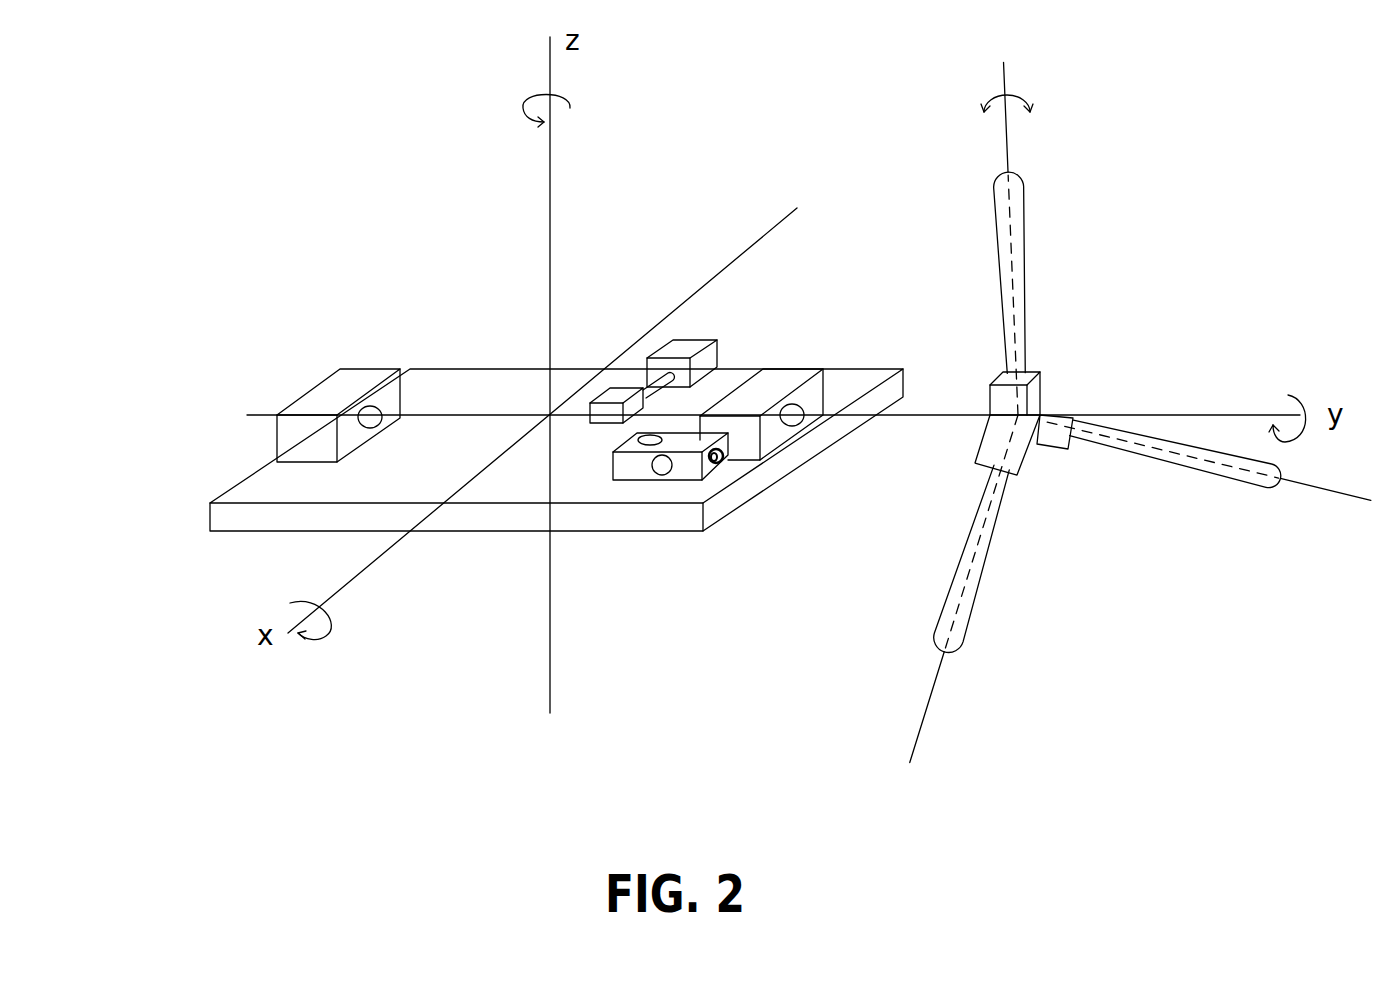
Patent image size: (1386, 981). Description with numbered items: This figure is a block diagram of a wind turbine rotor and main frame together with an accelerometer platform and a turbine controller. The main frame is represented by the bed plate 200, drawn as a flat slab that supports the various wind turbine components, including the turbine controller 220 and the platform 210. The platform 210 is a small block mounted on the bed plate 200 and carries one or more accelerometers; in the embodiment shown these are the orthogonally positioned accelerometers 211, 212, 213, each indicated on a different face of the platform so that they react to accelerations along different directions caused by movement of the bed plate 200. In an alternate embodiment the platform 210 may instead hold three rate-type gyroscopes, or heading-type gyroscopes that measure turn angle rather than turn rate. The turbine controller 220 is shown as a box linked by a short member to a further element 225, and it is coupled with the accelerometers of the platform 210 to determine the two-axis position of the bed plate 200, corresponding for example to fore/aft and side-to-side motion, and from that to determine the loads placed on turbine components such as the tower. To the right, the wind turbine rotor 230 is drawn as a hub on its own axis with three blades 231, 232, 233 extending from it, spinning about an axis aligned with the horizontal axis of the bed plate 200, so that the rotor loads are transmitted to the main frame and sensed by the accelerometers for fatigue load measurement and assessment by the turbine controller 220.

The bed plate 200 is at (218, 532).
The platform 210 is at (704, 484).
The accelerometer 211 is at (645, 437).
The accelerometer 212 is at (658, 478).
The accelerometer 213 is at (722, 465).
The turbine controller 220 is at (687, 347).
The slider block 225 is at (602, 408).
The rotor hub 230 is at (1033, 457).
The first rotor blade 231 is at (1028, 220).
The second rotor blade 232 is at (962, 650).
The third rotor blade 233 is at (1235, 490).